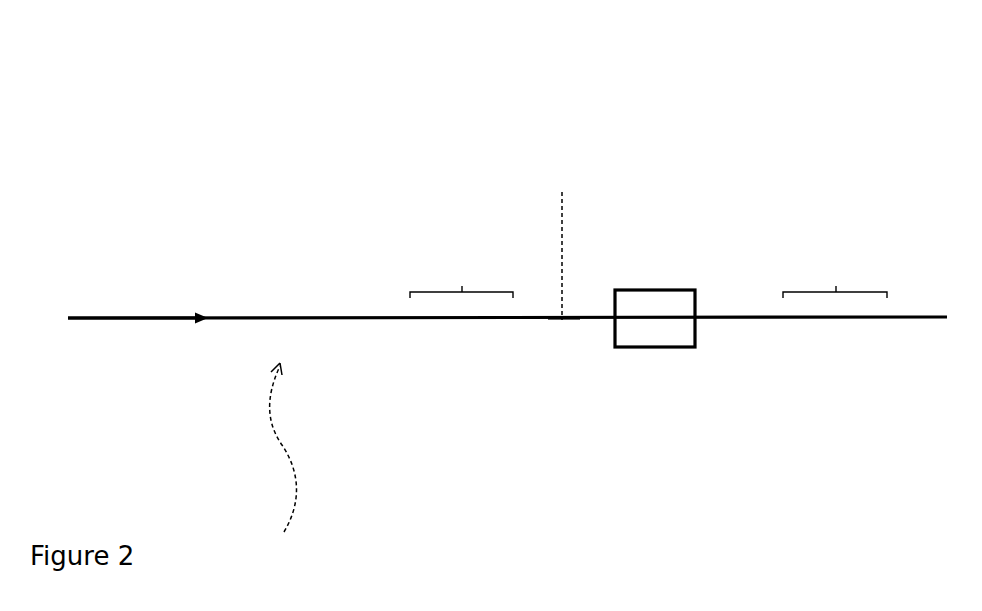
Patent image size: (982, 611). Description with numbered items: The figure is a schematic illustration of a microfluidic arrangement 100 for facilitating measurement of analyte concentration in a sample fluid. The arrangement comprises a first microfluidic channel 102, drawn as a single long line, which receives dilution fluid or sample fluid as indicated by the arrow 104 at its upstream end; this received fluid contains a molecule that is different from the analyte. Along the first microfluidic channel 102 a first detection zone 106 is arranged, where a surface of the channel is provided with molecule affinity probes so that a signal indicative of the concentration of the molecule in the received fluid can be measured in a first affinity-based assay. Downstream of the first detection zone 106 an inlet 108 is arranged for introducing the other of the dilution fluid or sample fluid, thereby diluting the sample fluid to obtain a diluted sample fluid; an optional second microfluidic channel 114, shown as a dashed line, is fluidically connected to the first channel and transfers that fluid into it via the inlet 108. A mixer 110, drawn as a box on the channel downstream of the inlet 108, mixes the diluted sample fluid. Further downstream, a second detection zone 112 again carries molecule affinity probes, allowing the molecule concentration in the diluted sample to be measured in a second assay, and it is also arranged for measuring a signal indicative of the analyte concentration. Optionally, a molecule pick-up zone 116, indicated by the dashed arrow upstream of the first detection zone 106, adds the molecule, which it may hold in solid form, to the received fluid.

The microfluidic arrangement 100 is at (235, 118).
The first microfluidic channel 102 is at (340, 320).
The arrow 104 is at (139, 317).
The first detection zone 106 is at (461, 264).
The inlet 108 is at (563, 318).
The mixer 110 is at (658, 290).
The second detection zone 112 is at (835, 264).
The second microfluidic channel 114 is at (563, 208).
The molecule pick-up zone 116 is at (289, 468).